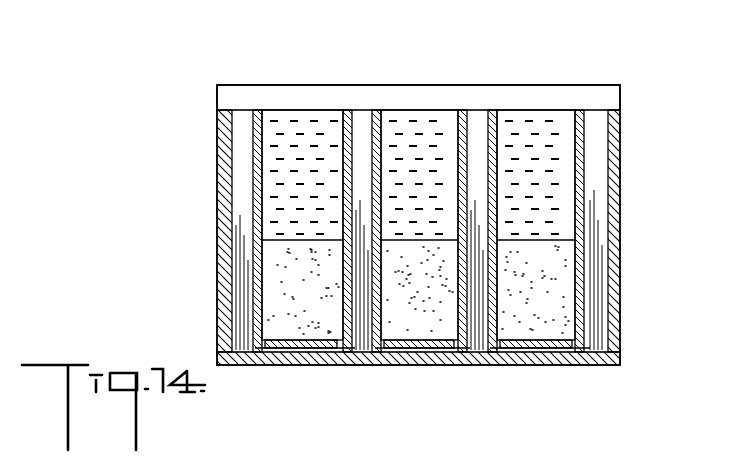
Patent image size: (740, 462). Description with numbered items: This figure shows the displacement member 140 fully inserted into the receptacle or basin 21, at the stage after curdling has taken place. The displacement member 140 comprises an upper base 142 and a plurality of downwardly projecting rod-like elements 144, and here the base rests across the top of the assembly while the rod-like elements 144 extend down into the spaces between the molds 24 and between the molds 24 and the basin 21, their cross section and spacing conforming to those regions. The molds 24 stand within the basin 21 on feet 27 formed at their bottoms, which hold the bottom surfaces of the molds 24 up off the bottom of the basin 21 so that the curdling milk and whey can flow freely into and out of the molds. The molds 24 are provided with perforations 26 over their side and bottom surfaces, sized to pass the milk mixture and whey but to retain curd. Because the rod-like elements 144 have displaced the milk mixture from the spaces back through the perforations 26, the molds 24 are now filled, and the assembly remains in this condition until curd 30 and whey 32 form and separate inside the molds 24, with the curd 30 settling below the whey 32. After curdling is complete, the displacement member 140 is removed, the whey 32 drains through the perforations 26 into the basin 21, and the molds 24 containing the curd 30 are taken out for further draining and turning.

The displacement member 140 is at (283, 72).
The upper base 142 is at (374, 92).
The molds 24 is at (331, 112).
The rod-like elements 144 is at (248, 140).
The whey 32 is at (252, 167).
The perforations 26 is at (262, 185).
The curd 30 is at (278, 296).
The basin 21 is at (621, 262).
The feet 27 is at (572, 367).